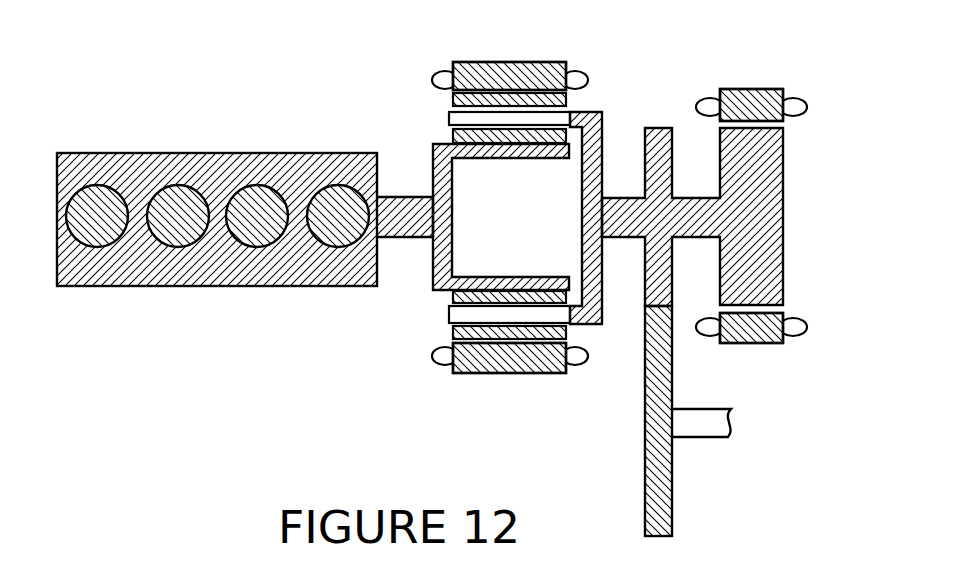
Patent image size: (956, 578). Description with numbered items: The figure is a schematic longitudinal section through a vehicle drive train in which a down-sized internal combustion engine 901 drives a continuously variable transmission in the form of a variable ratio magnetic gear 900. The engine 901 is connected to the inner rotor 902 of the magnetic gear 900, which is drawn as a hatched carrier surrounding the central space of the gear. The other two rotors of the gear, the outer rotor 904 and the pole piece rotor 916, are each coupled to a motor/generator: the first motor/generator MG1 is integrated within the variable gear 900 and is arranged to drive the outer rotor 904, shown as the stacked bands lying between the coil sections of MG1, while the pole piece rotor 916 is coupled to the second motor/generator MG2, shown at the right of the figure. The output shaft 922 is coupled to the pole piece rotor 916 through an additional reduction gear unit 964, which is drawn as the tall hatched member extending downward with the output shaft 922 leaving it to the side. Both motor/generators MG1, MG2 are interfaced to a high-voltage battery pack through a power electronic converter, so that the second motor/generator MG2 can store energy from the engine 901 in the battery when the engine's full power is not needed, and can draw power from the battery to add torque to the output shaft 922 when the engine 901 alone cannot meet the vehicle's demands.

The variable ratio magnetic gear 900 is at (403, 92).
The internal combustion engine 901 is at (213, 276).
The inner rotor 902 is at (445, 285).
The outer rotor 904 is at (567, 100).
The pole piece rotor 916 is at (603, 128).
The output shaft 922 is at (700, 412).
The reduction gear unit 964 is at (672, 465).
The first motor/generator MG1 is at (520, 65).
The second motor/generator MG2 is at (745, 92).